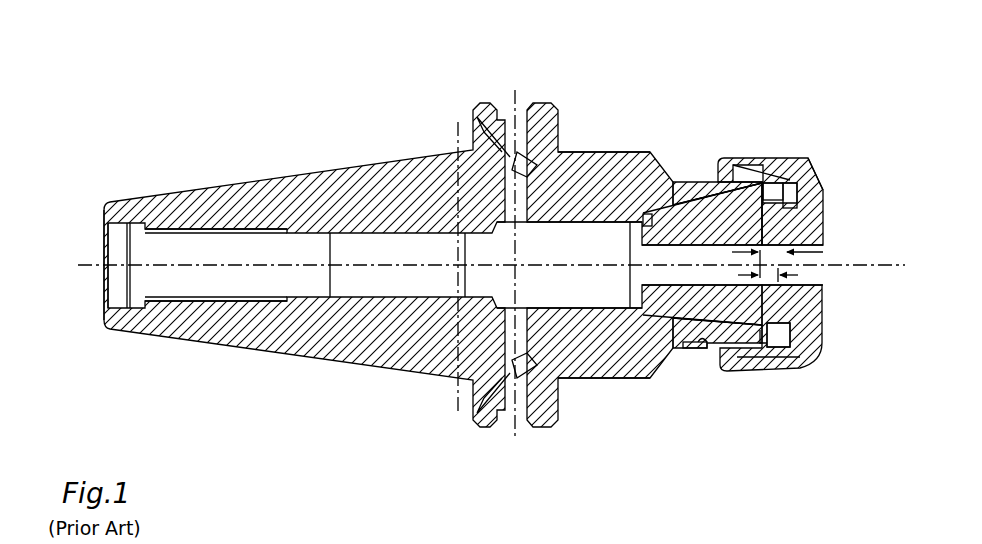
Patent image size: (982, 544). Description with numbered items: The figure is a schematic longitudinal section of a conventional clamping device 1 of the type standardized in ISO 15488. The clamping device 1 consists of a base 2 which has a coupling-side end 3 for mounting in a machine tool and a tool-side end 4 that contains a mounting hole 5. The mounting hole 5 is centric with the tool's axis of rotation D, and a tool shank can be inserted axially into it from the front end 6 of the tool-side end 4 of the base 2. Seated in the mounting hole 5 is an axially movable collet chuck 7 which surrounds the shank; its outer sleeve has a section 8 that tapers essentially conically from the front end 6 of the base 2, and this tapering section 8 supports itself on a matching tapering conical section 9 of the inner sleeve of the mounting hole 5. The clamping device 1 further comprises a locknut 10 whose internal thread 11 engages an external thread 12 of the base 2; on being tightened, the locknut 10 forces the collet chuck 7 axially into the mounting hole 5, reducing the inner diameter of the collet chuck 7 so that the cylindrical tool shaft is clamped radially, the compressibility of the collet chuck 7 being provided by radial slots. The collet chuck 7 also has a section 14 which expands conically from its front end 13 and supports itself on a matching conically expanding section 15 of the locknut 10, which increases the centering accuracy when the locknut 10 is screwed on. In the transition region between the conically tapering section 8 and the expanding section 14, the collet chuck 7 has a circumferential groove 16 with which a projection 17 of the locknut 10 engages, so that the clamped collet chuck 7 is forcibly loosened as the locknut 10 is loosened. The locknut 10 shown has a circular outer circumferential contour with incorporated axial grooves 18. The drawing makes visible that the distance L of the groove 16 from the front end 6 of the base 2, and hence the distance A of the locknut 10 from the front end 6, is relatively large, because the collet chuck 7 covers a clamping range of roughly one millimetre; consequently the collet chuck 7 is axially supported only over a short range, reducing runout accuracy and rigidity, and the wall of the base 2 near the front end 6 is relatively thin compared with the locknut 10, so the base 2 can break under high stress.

The clamping device 1 is at (248, 108).
The base 2 is at (403, 338).
The coupling-side end 3 is at (175, 337).
The tool-side end 4 is at (657, 367).
The mounting hole 5 is at (575, 287).
The front end 6 is at (735, 362).
The collet chuck 7 is at (705, 230).
The conically tapering section 8 is at (697, 188).
The conical section 9 is at (652, 222).
The locknut 10 is at (806, 175).
The internal thread 11 is at (732, 158).
The external thread 12 is at (693, 345).
The front end 13 is at (823, 300).
The conically expanding section 14 is at (793, 320).
The conically expanding section 15 is at (818, 178).
The circumferential groove 16 is at (772, 186).
The projection 17 is at (790, 195).
The axial grooves 18 is at (772, 362).
The axis of rotation D is at (170, 258).
The distance A is at (787, 260).
The distance L is at (759, 271).